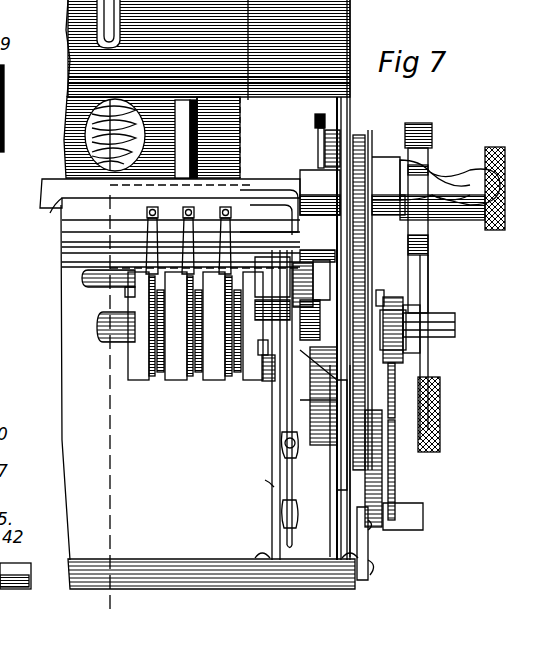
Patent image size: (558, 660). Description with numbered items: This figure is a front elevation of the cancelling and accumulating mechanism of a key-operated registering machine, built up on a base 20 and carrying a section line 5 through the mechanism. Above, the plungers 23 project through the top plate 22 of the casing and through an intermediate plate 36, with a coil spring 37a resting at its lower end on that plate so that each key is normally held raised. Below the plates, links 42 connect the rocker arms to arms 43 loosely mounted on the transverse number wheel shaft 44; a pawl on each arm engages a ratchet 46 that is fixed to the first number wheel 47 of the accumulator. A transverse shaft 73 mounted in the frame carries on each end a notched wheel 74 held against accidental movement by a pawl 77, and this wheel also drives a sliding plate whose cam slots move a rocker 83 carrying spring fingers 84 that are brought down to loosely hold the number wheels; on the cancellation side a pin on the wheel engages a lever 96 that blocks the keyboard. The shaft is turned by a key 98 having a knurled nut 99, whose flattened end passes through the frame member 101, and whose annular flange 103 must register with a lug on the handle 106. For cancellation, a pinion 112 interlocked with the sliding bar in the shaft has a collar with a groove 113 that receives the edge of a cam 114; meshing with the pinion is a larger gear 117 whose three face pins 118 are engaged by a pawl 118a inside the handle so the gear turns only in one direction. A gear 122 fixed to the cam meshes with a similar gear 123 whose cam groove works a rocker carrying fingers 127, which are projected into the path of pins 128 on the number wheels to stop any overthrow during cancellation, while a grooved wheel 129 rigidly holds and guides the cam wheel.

The section line 5 is at (135, 612).
The base 20 is at (253, 595).
The top plate 22 is at (68, 54).
The plungers 23 is at (97, 18).
The intermediate plate 36 is at (236, 120).
The coil spring 37a is at (68, 142).
The links 42 is at (292, 497).
The arms 43 is at (292, 438).
The number wheel shaft 44 is at (456, 326).
The ratchet 46 is at (266, 380).
The number wheel 47 is at (245, 380).
The transverse shaft 73 is at (278, 180).
The wheel 74 is at (328, 164).
The pawl 77 is at (315, 124).
The rocker 83 is at (64, 214).
The spring fingers 84 is at (228, 236).
The lever 96 is at (274, 490).
The key 98 is at (378, 216).
The knurled nut 99 is at (490, 150).
The frame member 101 is at (350, 96).
The annular flange 103 is at (432, 250).
The handle 106 is at (422, 274).
The pinion 112 is at (403, 301).
The groove 113 is at (384, 298).
The cam 114 is at (380, 472).
The gear 117 is at (395, 493).
The pins 118 is at (420, 456).
The pawl 118a is at (424, 346).
The gear 122 is at (370, 538).
The gear 123 is at (364, 136).
The fingers 127 is at (125, 272).
The pins 128 is at (128, 292).
The grooved wheel 129 is at (392, 394).